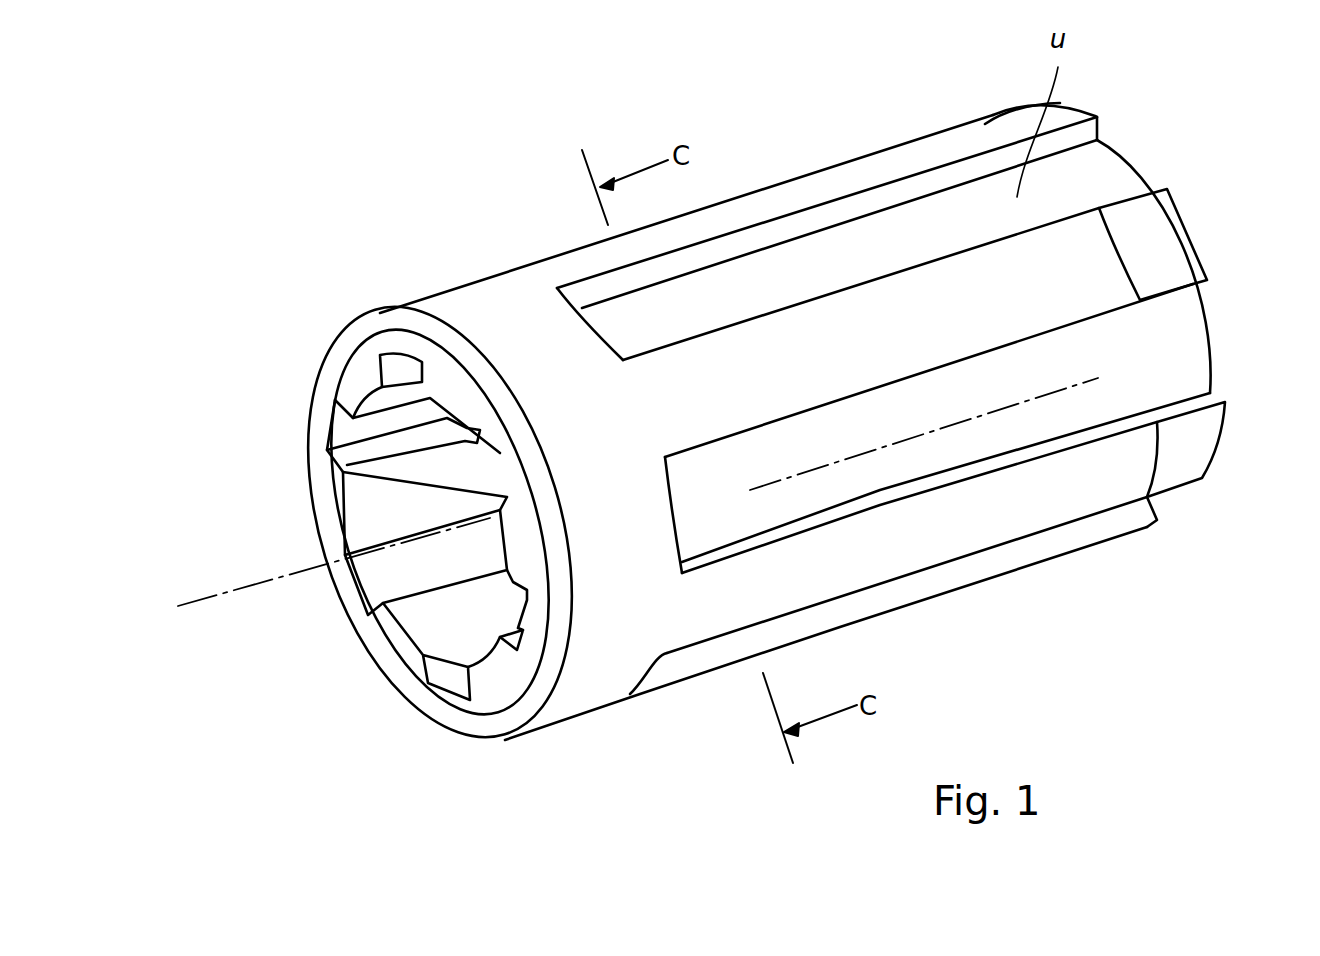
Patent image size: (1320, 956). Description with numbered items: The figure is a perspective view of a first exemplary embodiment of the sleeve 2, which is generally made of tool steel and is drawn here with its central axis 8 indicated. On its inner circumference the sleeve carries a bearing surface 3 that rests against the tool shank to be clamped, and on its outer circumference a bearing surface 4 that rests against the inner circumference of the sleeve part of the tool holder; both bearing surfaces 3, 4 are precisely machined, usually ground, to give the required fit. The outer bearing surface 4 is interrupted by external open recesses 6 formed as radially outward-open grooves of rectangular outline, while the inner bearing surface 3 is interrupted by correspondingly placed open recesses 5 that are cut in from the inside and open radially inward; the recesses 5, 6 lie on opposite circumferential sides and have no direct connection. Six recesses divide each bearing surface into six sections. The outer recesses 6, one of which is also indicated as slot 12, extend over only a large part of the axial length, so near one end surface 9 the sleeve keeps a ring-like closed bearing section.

The sleeve 2 is at (336, 219).
The inner bearing surface 3 is at (370, 402).
The outer bearing surface 4 is at (868, 170).
The inner open recess 5 is at (340, 425).
The outer open recess 6 is at (1117, 170).
The axis 8 is at (210, 600).
The end surface 9 is at (445, 387).
The slot 12 is at (947, 427).